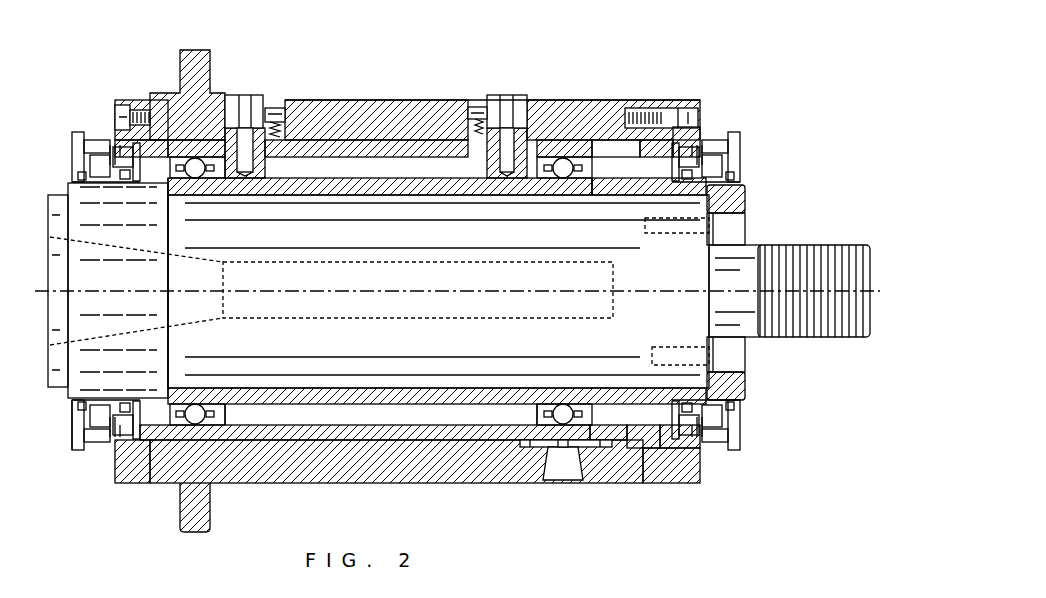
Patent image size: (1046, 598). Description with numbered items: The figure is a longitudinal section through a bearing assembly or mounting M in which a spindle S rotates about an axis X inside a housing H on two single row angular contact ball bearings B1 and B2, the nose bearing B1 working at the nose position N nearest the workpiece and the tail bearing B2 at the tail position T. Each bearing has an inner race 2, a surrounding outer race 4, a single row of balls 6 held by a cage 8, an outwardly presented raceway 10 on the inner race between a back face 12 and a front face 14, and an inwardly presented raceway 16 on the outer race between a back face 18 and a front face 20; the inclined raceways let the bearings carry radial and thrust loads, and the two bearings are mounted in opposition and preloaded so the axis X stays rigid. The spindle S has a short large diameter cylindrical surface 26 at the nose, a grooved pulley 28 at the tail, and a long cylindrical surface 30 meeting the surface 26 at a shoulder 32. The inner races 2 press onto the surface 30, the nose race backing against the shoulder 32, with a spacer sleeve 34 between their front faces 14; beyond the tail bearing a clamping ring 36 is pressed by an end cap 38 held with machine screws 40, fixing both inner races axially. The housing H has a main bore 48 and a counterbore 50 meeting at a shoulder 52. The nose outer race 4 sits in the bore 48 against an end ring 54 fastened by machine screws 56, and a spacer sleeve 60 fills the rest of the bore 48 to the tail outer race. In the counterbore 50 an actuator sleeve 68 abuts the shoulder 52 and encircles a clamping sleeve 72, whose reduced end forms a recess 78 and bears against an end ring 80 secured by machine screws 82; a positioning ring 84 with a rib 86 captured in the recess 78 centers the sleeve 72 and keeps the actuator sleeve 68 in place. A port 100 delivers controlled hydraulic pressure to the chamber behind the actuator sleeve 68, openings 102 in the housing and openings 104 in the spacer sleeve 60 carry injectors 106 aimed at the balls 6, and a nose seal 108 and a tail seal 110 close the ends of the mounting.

The inner race 2 is at (193, 196).
The outer race 4 is at (207, 160).
The balls 6 is at (207, 173).
The cage 8 is at (168, 183).
The raceway 10 is at (222, 420).
The back face 12 is at (167, 390).
The front face 14 is at (240, 402).
The raceway 16 is at (193, 400).
The back face 18 is at (270, 443).
The front face 20 is at (140, 453).
The large diameter cylindrical surface 26 is at (88, 282).
The pulley 28 is at (798, 337).
The cylindrical surface 30 is at (428, 245).
The shoulder 32 is at (170, 273).
The spacer sleeve 34 is at (383, 196).
The clamping ring 36 is at (623, 197).
The end cap 38 is at (697, 242).
The machine screws 40 is at (743, 225).
The main bore 48 is at (353, 157).
The counterbore 50 is at (580, 140).
The shoulder 52 is at (525, 443).
The end ring 54 is at (138, 100).
The machine screws 56 is at (115, 117).
The spacer sleeve 60 is at (402, 153).
The actuator sleeve 68 is at (580, 120).
The clamping sleeve 72 is at (617, 143).
The recess 78 is at (610, 447).
The end ring 80 is at (680, 463).
The machine screws 82 is at (703, 110).
The positioning ring 84 is at (637, 450).
The rib 86 is at (633, 423).
The port 100 is at (567, 470).
The openings 102 is at (240, 118).
The openings 104 is at (228, 180).
The injectors 106 is at (257, 102).
The nose seal 108 is at (63, 443).
The seal 110 is at (709, 443).
The mounting M is at (390, 50).
The nose position N is at (62, 153).
The spindle S is at (63, 402).
The tail position T is at (750, 120).
The housing H is at (260, 477).
The axis X is at (295, 290).
The nose bearing B1 is at (230, 418).
The tail bearing B2 is at (523, 417).